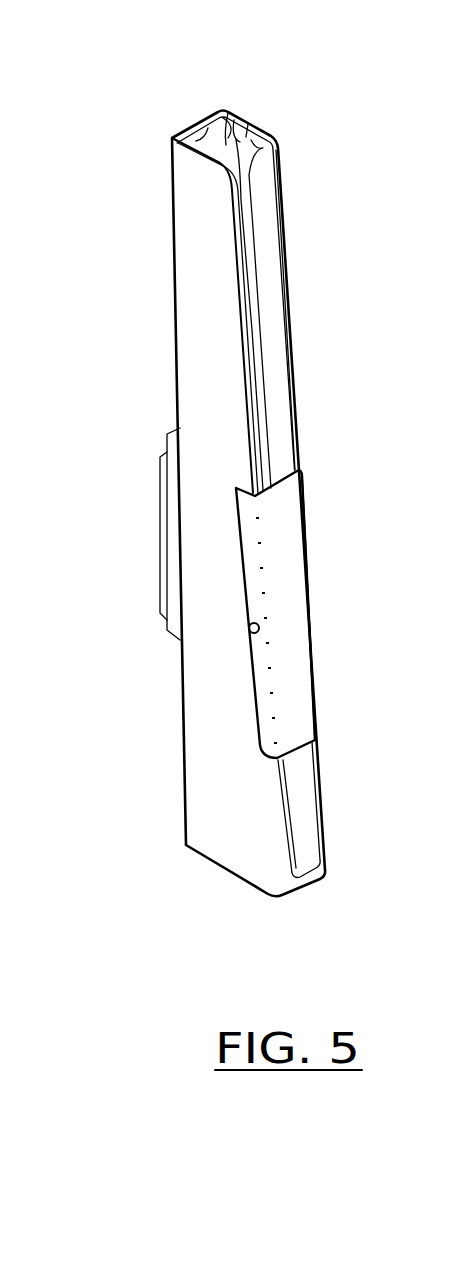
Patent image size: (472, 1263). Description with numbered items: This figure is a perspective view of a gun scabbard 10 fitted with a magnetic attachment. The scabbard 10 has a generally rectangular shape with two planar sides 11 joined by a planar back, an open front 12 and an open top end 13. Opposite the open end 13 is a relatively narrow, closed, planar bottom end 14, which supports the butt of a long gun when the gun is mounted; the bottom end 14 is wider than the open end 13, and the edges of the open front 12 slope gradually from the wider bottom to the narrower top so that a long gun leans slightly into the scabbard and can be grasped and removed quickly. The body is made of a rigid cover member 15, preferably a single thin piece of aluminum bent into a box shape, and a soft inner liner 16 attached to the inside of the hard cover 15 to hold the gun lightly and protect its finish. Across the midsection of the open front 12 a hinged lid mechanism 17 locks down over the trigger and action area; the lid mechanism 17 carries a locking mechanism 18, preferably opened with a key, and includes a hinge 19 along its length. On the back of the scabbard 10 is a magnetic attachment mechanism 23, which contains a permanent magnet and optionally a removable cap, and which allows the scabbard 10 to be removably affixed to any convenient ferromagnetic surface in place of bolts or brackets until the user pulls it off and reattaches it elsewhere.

The scabbard 10 is at (283, 180).
The planar sides 11 is at (193, 197).
The open front 12 is at (253, 272).
The open top end 13 is at (228, 112).
The bottom end 14 is at (230, 877).
The cover member 15 is at (207, 315).
The inner liner 16 is at (287, 307).
The hinged lid mechanism 17 is at (288, 535).
The locking mechanism 18 is at (249, 632).
The hinge 19 is at (315, 660).
The magnetic attachment mechanism 23 is at (160, 528).